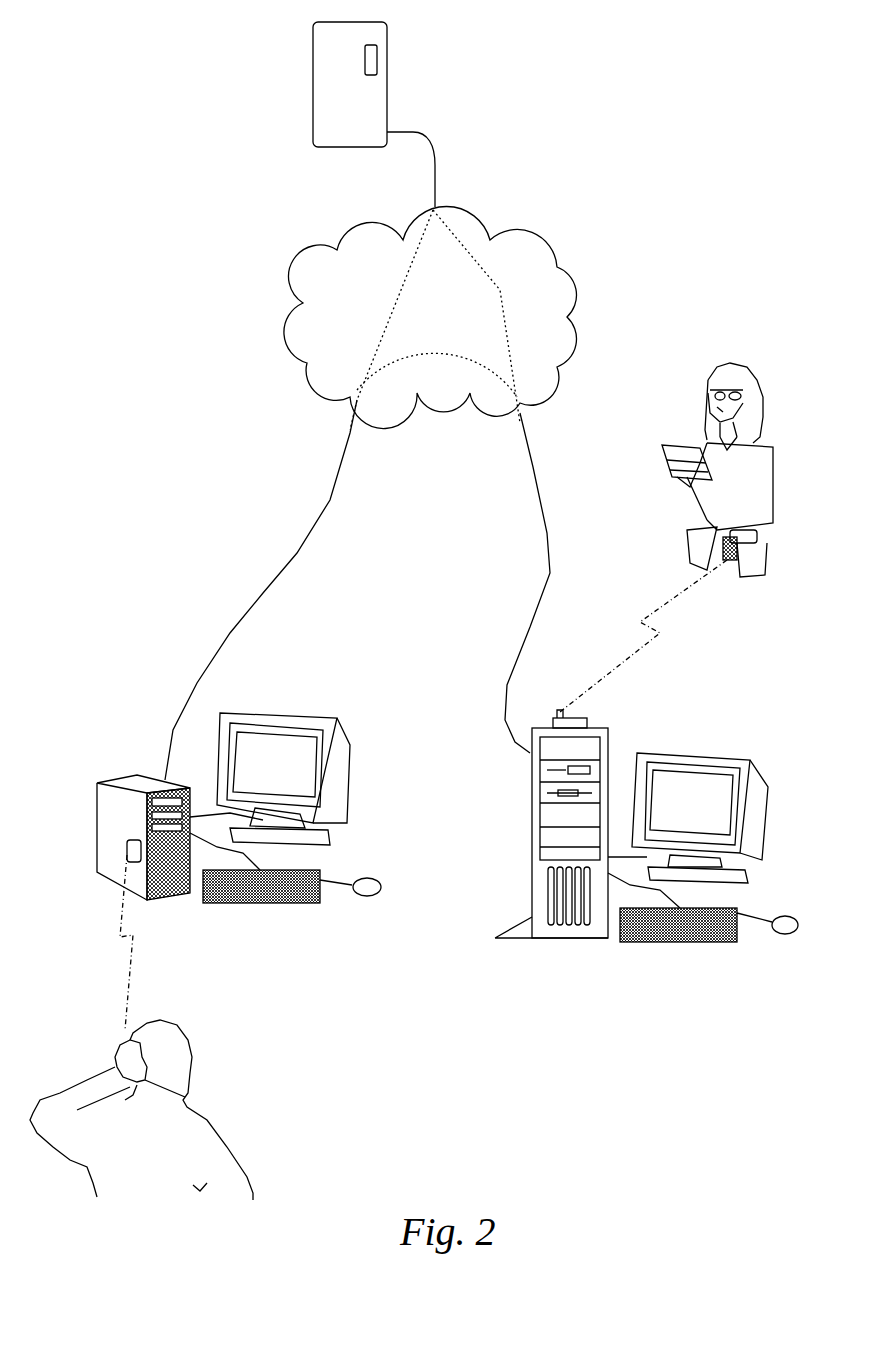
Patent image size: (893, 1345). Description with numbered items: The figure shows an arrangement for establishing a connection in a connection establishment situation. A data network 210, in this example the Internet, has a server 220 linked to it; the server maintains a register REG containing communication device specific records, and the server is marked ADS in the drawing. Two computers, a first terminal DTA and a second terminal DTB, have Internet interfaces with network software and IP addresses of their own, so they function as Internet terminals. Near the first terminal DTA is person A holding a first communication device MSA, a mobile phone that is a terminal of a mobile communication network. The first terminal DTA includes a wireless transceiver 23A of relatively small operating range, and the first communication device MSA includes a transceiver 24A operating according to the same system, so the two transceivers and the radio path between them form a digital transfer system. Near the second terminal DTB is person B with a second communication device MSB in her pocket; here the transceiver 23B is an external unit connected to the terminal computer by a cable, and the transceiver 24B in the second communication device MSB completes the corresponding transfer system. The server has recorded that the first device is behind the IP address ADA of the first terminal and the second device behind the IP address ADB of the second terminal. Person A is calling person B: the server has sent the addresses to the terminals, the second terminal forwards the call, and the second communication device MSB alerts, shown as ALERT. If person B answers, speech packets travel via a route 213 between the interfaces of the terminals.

The server 220 is at (313, 83).
The register REG is at (372, 60).
The alert distribution server ADS is at (415, 153).
The data network 210 is at (537, 237).
The route 213 is at (458, 352).
The first terminal DTA is at (127, 780).
The transceiver 23A is at (127, 843).
The IP address ADA is at (285, 790).
The person A is at (177, 1027).
The first communication device MSA is at (143, 1082).
The transceiver 24A is at (140, 1093).
The second terminal DTB is at (532, 837).
The transceiver 23B is at (583, 717).
The IP address ADB is at (703, 828).
The person B is at (747, 367).
The second communication device MSB is at (743, 557).
The alert notification ALERT is at (723, 547).
The transceiver 24B is at (743, 560).